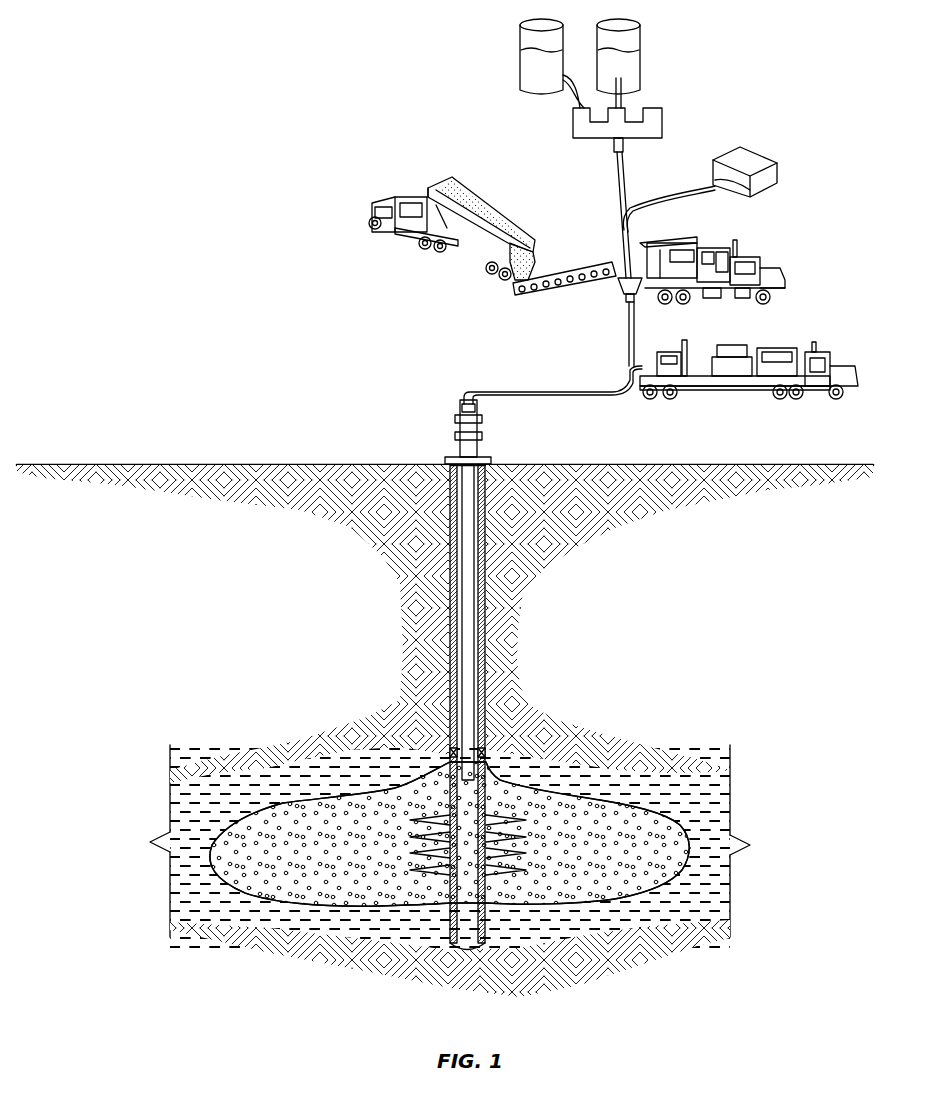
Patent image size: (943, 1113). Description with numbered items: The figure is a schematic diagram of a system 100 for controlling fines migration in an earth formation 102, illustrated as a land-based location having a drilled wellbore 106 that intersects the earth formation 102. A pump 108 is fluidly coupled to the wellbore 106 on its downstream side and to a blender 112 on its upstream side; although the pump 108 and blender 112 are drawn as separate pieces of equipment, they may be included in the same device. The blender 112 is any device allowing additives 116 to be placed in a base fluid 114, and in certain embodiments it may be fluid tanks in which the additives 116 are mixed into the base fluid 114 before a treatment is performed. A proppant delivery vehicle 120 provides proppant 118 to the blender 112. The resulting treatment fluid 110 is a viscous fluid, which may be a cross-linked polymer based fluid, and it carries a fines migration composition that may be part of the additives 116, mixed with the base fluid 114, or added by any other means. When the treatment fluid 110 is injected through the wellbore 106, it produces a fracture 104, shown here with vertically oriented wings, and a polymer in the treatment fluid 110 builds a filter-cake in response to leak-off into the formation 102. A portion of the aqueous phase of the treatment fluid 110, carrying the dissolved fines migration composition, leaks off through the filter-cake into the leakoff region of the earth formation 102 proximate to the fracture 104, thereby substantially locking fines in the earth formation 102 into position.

The system 100 is at (186, 56).
The earth formation 102 is at (712, 800).
The fracture 104 is at (616, 864).
The wellbore 106 is at (486, 636).
The pump 108 is at (775, 346).
The treatment fluid 110 is at (552, 390).
The blender 112 is at (765, 266).
The base fluid 114 is at (642, 62).
The additives 116 is at (758, 156).
The proppant 118 is at (612, 262).
The proppant delivery vehicle 120 is at (412, 193).